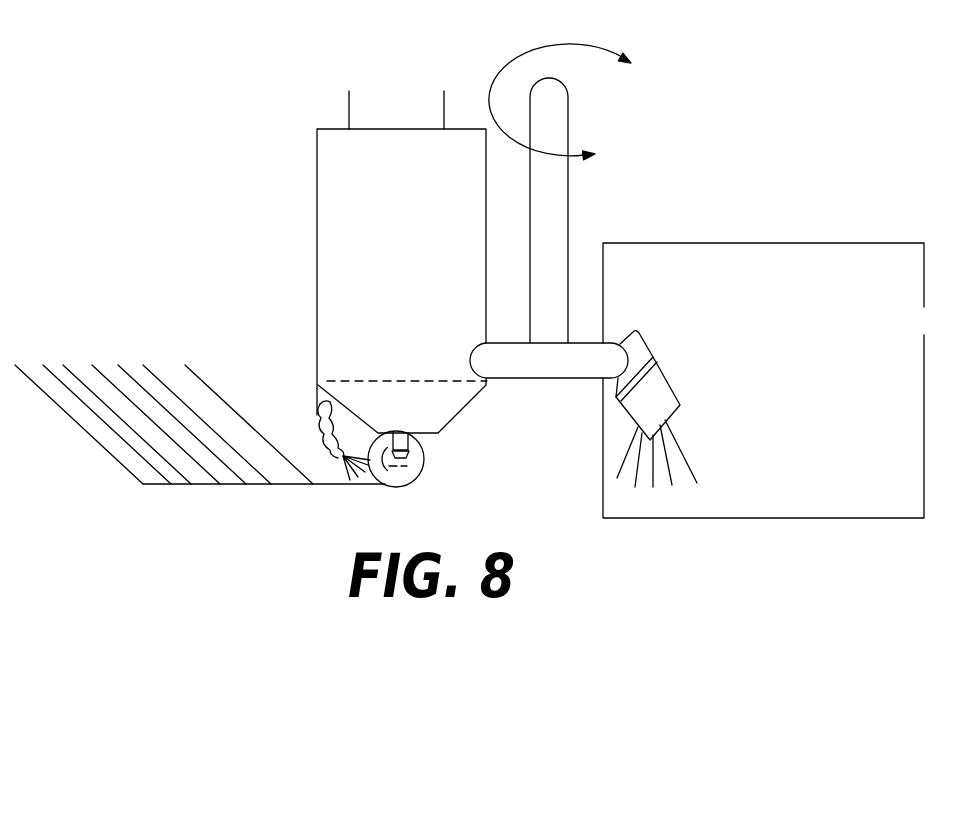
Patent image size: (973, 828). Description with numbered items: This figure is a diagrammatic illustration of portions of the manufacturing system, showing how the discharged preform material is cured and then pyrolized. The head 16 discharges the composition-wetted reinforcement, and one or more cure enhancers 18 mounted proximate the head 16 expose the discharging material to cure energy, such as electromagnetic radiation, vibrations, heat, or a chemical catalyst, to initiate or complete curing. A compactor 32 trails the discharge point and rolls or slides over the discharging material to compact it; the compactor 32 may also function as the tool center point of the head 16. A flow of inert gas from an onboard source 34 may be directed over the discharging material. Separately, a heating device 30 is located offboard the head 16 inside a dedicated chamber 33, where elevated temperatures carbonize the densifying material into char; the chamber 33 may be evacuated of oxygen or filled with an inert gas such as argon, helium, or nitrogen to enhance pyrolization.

The head 16 is at (381, 272).
The cure enhancer 18 is at (400, 440).
The heating device 30 is at (680, 382).
The compactor 32 is at (413, 467).
The chamber 33 is at (788, 329).
The onboard source 34 is at (317, 416).